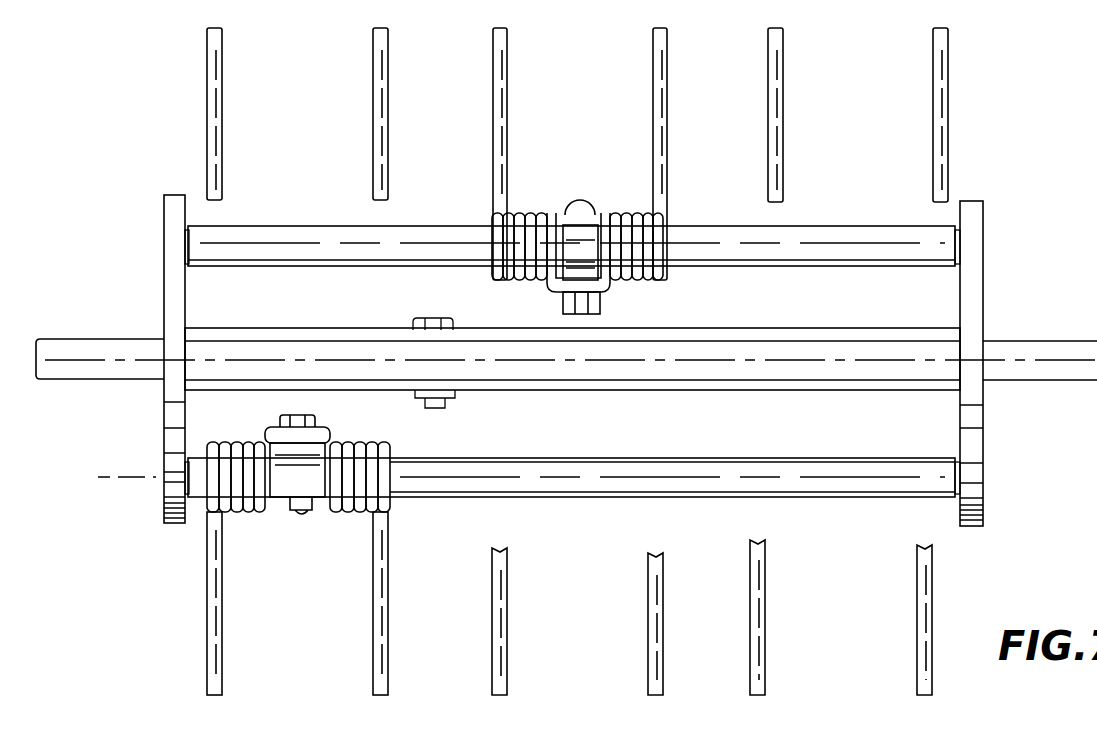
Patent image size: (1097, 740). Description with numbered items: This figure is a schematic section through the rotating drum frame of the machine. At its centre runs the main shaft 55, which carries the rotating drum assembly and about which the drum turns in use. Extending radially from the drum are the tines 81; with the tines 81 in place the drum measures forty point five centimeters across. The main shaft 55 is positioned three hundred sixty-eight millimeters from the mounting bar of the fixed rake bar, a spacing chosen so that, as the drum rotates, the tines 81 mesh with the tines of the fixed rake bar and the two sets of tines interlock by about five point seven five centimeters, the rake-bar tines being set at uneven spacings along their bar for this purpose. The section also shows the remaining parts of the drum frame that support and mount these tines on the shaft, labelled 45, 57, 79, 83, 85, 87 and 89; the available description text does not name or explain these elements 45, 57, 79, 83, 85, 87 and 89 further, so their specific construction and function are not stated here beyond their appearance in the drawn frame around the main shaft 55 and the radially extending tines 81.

The end plate 45 is at (164, 508).
The main shaft 55 is at (1058, 343).
The nut 57 is at (425, 318).
The cross bar 79 is at (937, 245).
The tines 81 is at (358, 452).
The bolt 83 is at (288, 517).
The blade 85 is at (222, 150).
The lower bar 87 is at (585, 487).
The axis line 89 is at (128, 475).